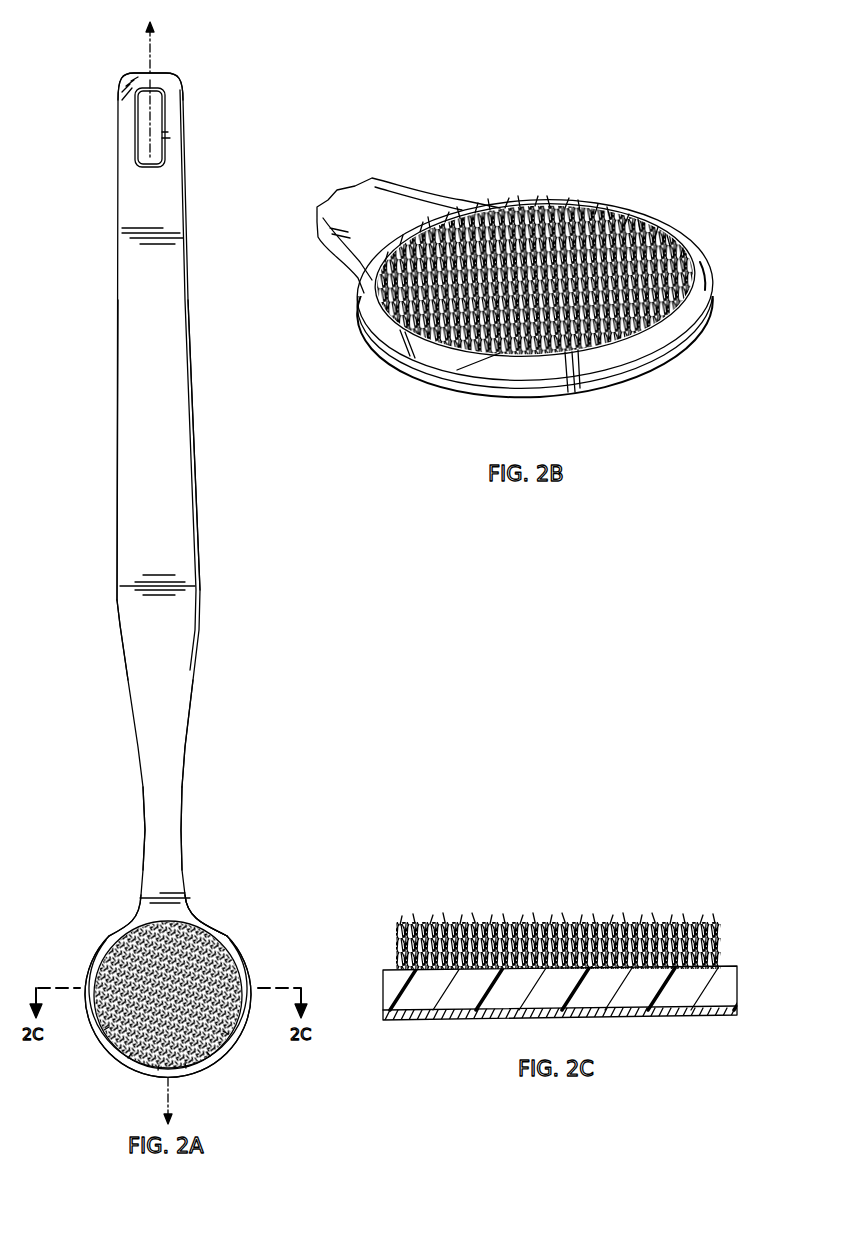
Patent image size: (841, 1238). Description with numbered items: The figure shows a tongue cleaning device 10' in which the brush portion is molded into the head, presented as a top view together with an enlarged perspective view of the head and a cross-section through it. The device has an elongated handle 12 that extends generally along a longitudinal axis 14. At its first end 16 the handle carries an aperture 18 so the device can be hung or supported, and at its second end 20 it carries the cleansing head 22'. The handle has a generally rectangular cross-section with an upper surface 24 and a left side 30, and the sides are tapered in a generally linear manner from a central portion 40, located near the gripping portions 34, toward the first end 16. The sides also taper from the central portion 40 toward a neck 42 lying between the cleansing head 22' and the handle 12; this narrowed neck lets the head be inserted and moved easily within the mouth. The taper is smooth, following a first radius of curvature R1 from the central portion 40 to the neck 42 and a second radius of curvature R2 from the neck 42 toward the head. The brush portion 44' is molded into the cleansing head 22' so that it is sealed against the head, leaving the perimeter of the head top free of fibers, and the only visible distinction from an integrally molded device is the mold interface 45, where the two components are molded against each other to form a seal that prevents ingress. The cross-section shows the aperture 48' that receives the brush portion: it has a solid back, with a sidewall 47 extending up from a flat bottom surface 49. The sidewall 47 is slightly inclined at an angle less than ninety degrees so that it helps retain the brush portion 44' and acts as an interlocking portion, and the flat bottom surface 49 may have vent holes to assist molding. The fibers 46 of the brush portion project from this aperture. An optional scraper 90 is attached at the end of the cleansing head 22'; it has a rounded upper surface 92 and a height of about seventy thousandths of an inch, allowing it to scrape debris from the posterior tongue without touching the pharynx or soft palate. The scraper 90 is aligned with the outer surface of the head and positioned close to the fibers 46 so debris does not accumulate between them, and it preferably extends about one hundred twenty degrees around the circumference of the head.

In FIG. 2A, the tongue cleaning device 10' is at (172, 573).
In FIG. 2A, the handle 12 is at (130, 313).
In FIG. 2A, the longitudinal axis 14 is at (148, 48).
In FIG. 2A, the first end 16 is at (108, 128).
In FIG. 2A, the aperture 18 is at (155, 122).
In FIG. 2A, the second end 20 is at (112, 754).
In FIG. 2A, the cleansing head 22' is at (200, 1006).
In FIG. 2B, the cleansing head 22' is at (517, 306).
In FIG. 2A, the upper surface 24 is at (190, 355).
In FIG. 2A, the left side 30 is at (116, 427).
In FIG. 2A, the gripping portions 34 is at (216, 576).
In FIG. 2A, the central portion 40 is at (98, 590).
In FIG. 2A, the neck 42 is at (172, 822).
In FIG. 2A, the brush portion 44' is at (155, 980).
In FIG. 2B, the brush portion 44' is at (519, 271).
In FIG. 2A, the mold interface 45 is at (237, 957).
In FIG. 2B, the mold interface 45 is at (390, 305).
In FIG. 2A, the fibers 46 is at (98, 980).
In FIG. 2B, the fibers 46 is at (520, 200).
In FIG. 2C, the fibers 46 is at (390, 968).
In FIG. 2C, the sidewall 47 is at (735, 975).
In FIG. 2C, the aperture 48' is at (541, 976).
In FIG. 2C, the flat bottom surface 49 is at (720, 1015).
In FIG. 2A, the scraper 90 is at (215, 1060).
In FIG. 2B, the scraper 90 is at (630, 348).
In FIG. 2B, the rounded upper surface 92 is at (690, 245).
In FIG. 2A, the first radius of curvature R1 is at (188, 725).
In FIG. 2A, the second radius of curvature R2 is at (188, 905).